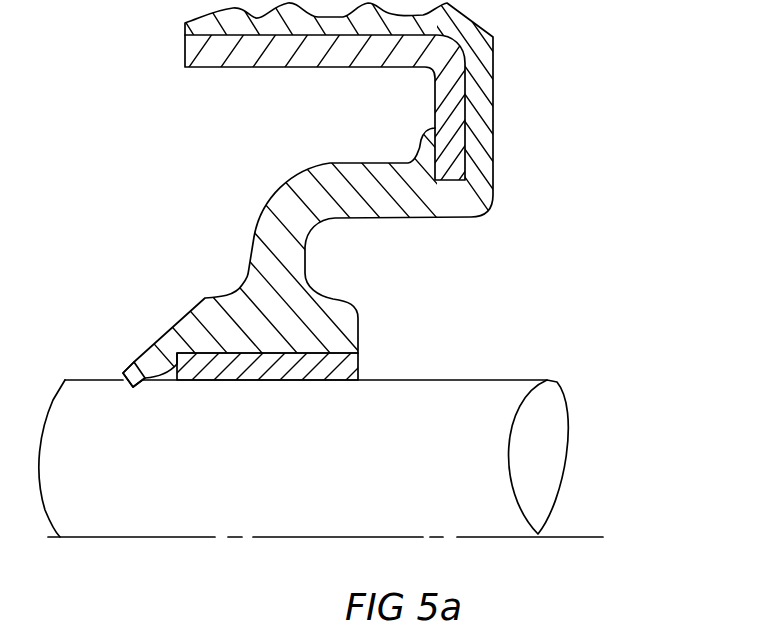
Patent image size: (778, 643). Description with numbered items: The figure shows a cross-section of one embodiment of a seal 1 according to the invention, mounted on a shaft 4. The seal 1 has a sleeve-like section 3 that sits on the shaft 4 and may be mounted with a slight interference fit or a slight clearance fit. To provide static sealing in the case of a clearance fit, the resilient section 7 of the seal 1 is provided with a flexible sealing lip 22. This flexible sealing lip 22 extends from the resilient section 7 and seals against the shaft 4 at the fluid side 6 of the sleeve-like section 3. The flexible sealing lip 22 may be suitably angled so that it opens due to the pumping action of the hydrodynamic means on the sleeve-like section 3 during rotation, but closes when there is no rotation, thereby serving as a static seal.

The seal 1 is at (541, 199).
The sleeve-like section 3 is at (358, 362).
The shaft 4 is at (540, 443).
The fluid side 6 is at (140, 178).
The resilient section 7 is at (353, 210).
The flexible sealing lip 22 is at (135, 387).